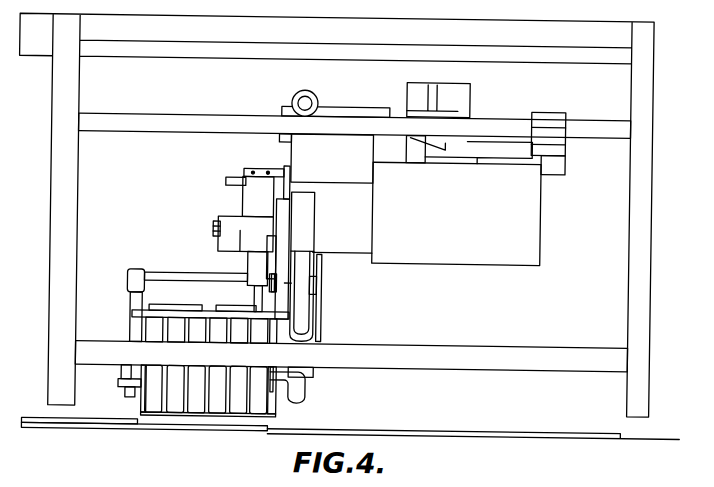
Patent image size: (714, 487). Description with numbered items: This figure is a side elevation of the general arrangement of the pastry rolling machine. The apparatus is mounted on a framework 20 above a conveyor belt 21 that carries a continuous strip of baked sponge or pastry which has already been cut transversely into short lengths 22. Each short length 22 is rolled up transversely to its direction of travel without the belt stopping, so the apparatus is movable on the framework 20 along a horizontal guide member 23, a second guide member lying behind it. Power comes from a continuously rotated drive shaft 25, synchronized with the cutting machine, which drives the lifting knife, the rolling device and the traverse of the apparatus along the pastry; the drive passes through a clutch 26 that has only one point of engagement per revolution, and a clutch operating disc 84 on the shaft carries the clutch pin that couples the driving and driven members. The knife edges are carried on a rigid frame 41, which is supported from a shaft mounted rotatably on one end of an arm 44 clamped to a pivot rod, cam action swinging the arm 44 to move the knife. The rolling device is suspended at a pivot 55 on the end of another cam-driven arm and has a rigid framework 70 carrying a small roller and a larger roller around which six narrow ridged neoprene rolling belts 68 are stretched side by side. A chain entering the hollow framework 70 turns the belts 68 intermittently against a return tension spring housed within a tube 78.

The framework 20 is at (636, 151).
The conveyor belt 21 is at (419, 430).
The short lengths 22 is at (124, 422).
The horizontal guide member 23 is at (183, 124).
The drive shaft 25 is at (230, 180).
The clutch 26 is at (457, 96).
The rigid frame 41 is at (170, 283).
The arm 44 is at (255, 269).
The pivot 55 is at (213, 232).
The rolling belts 68 is at (178, 334).
The rigid framework 70 is at (292, 284).
The tube 78 is at (305, 397).
The clutch operating disc 84 is at (424, 150).